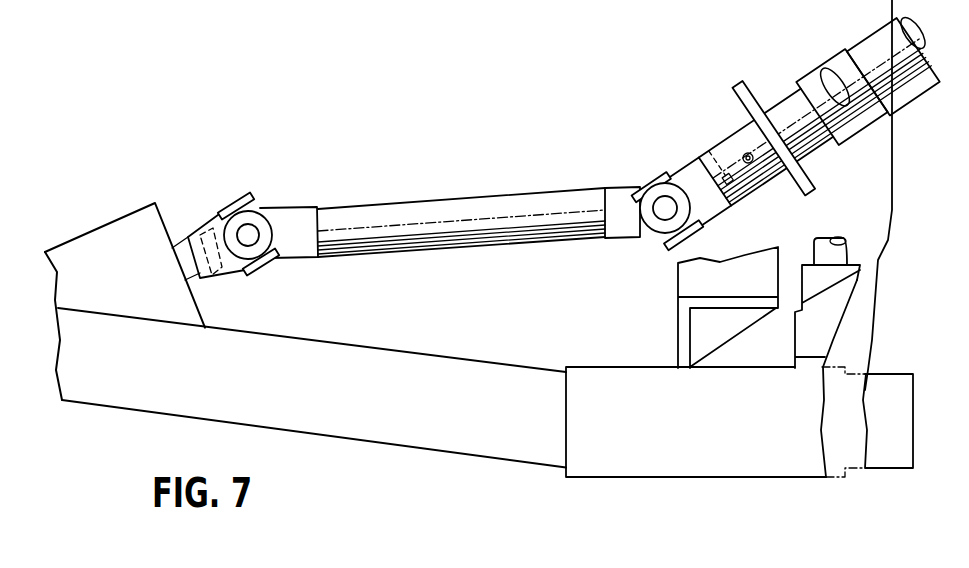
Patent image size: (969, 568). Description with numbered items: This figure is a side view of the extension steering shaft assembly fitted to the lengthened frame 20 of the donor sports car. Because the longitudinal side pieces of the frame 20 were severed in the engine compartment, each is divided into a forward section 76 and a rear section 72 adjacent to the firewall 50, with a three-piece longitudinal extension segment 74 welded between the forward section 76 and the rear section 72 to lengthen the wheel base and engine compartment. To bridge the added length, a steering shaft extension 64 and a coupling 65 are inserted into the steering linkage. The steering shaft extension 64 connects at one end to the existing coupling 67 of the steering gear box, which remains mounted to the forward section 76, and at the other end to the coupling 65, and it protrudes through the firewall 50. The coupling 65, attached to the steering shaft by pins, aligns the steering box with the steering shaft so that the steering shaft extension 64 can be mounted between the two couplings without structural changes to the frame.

The frame 20 is at (140, 398).
The firewall 50 is at (896, 24).
The steering shaft extension 64 is at (463, 211).
The coupling 65 is at (662, 177).
The existing coupling 67 is at (250, 233).
The rear section 72 is at (893, 457).
The longitudinal extension segment 74 is at (657, 465).
The forward section 76 is at (375, 427).